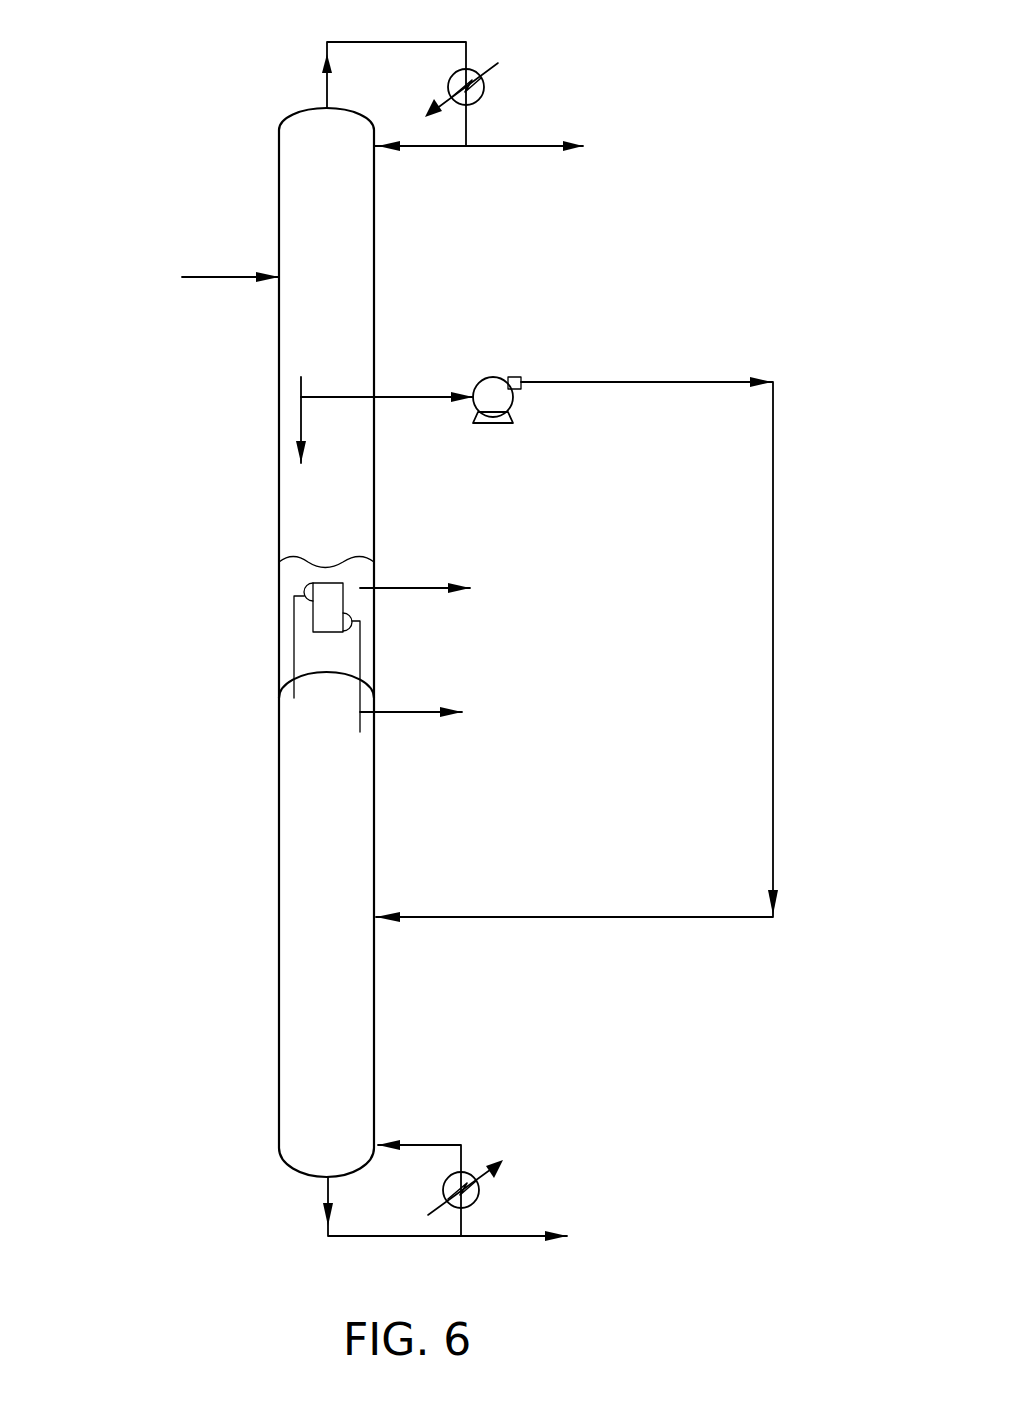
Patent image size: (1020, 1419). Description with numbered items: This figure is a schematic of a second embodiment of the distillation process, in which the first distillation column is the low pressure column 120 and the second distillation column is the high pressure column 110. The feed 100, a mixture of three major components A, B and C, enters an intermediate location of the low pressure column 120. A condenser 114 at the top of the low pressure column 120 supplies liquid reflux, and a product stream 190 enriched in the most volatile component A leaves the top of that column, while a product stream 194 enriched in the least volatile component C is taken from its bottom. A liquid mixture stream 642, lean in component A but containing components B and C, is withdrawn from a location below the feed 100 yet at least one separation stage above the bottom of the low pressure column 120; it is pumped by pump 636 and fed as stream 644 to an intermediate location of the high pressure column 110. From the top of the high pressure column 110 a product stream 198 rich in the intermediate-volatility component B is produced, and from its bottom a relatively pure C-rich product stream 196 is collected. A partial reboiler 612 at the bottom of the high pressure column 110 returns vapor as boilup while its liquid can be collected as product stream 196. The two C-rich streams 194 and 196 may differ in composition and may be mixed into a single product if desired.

The feed 100 is at (216, 280).
The high pressure column 110 is at (374, 1060).
The condenser 114 is at (485, 70).
The low pressure column 120 is at (279, 200).
The product stream 190 is at (510, 145).
The product stream 194 is at (404, 588).
The product stream 196 is at (492, 1237).
The product stream 198 is at (396, 712).
The partial reboiler 612 is at (472, 1175).
The pump 636 is at (491, 386).
The liquid mixture stream 642 is at (405, 396).
The stream 644 is at (655, 918).